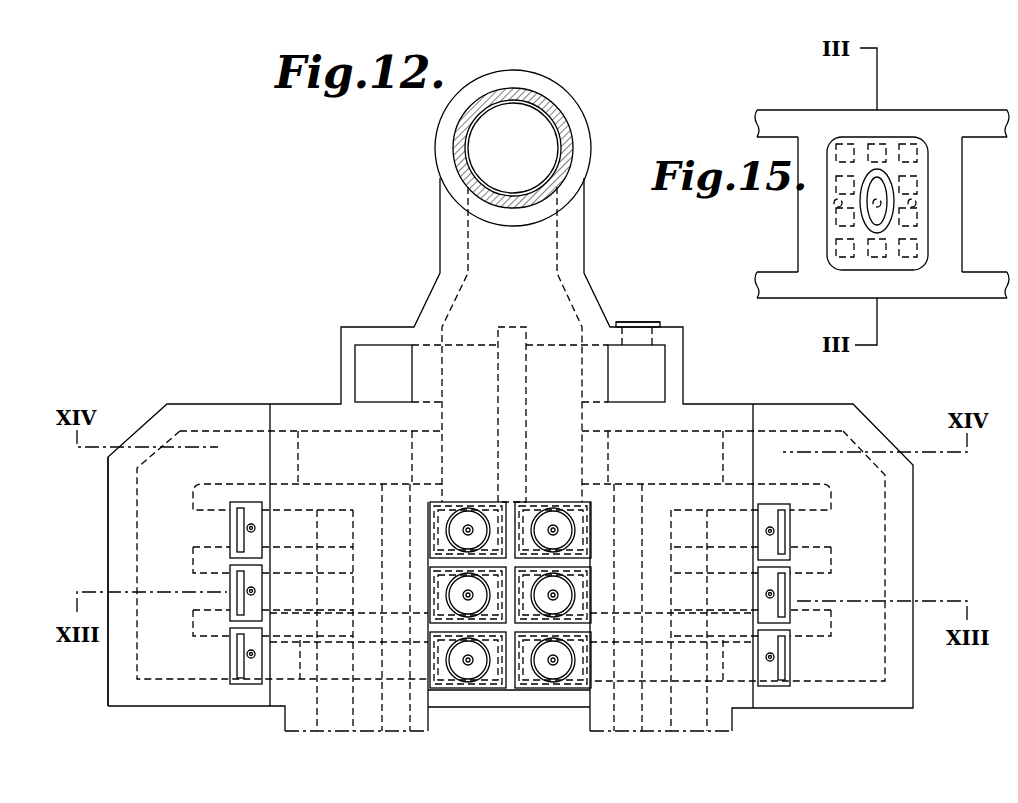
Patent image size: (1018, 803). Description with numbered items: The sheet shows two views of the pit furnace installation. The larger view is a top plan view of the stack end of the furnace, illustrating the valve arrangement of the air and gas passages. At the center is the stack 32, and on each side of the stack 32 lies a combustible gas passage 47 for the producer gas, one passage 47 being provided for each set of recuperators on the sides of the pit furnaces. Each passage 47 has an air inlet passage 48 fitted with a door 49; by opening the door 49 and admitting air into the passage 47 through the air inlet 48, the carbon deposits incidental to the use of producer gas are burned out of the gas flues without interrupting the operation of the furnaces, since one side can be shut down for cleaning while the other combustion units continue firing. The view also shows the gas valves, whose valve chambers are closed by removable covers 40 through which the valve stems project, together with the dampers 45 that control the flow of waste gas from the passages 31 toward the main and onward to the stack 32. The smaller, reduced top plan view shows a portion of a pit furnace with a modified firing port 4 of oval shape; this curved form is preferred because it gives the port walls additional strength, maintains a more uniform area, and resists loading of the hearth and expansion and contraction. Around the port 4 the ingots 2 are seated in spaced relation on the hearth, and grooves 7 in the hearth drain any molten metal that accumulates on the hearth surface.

In FIG. 12, the stack 32 is at (513, 148).
In FIG. 12, the combustible gas passage 47 is at (510, 373).
In FIG. 12, the air inlet passage 48 is at (630, 322).
In FIG. 12, the door 49 is at (645, 327).
In FIG. 12, the removable cover 40 is at (432, 506).
In FIG. 12, the damper 45 is at (230, 526).
In FIG. 12, the passage 31 is at (157, 563).
In FIG. 15, the ingot 2 is at (845, 150).
In FIG. 15, the groove 7 is at (890, 185).
In FIG. 15, the firing port 4 is at (877, 201).